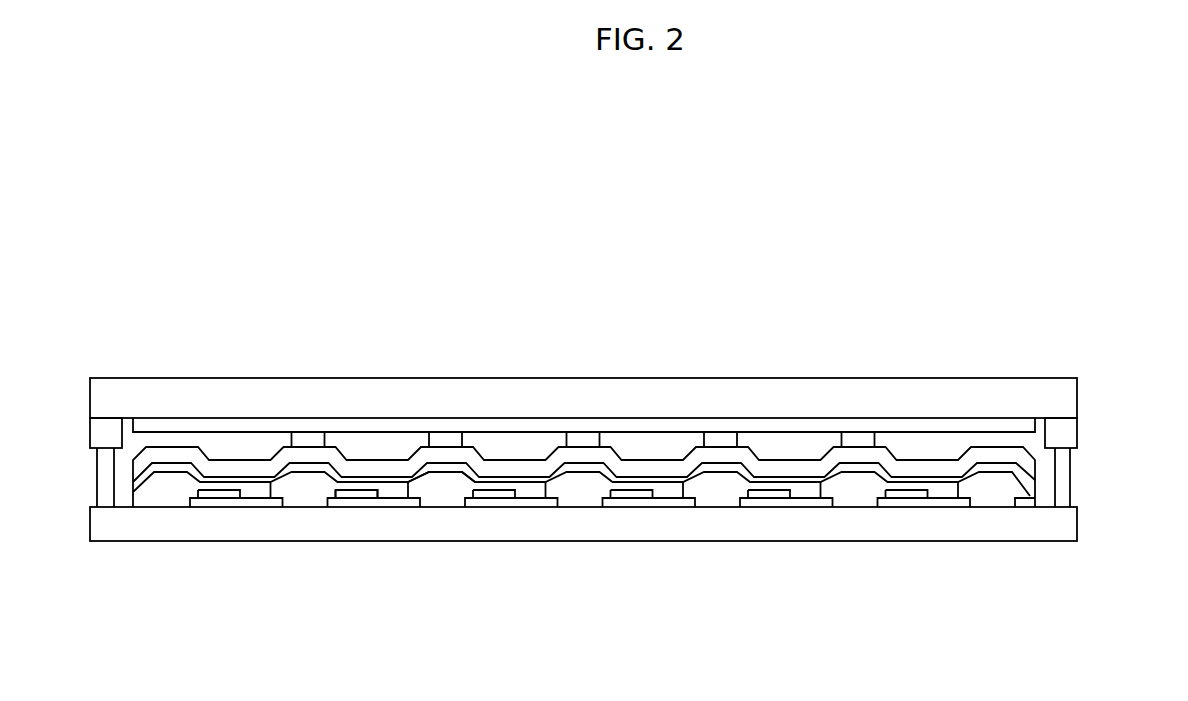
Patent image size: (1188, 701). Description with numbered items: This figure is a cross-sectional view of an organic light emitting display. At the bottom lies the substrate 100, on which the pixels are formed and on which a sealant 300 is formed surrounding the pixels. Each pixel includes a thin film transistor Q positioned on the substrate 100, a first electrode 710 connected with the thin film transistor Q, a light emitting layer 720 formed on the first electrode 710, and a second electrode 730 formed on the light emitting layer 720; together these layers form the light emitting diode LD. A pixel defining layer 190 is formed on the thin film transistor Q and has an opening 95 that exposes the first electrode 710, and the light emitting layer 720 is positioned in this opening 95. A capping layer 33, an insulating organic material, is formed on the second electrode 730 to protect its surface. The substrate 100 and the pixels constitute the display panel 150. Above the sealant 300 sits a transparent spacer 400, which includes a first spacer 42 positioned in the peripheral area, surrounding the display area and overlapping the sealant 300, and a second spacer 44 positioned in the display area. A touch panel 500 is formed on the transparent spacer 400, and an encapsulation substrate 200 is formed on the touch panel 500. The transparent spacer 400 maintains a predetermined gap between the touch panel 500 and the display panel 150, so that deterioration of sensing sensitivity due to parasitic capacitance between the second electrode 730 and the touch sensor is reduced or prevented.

The substrate 100 is at (1060, 525).
The display panel 150 is at (1142, 448).
The pixel defining layer 190 is at (438, 495).
The encapsulation substrate 200 is at (1060, 401).
The sealant 300 is at (1060, 469).
The capping layer 33 is at (513, 465).
The transparent spacer 400 is at (275, 317).
The first spacer 42 is at (103, 428).
The second spacer 44 is at (306, 436).
The touch panel 500 is at (628, 425).
The opening 95 is at (422, 473).
The first electrode 710 is at (268, 497).
The light emitting layer 720 is at (258, 488).
The second electrode 730 is at (176, 473).
The light emitting diode LD is at (295, 590).
The thin film transistor Q is at (347, 500).